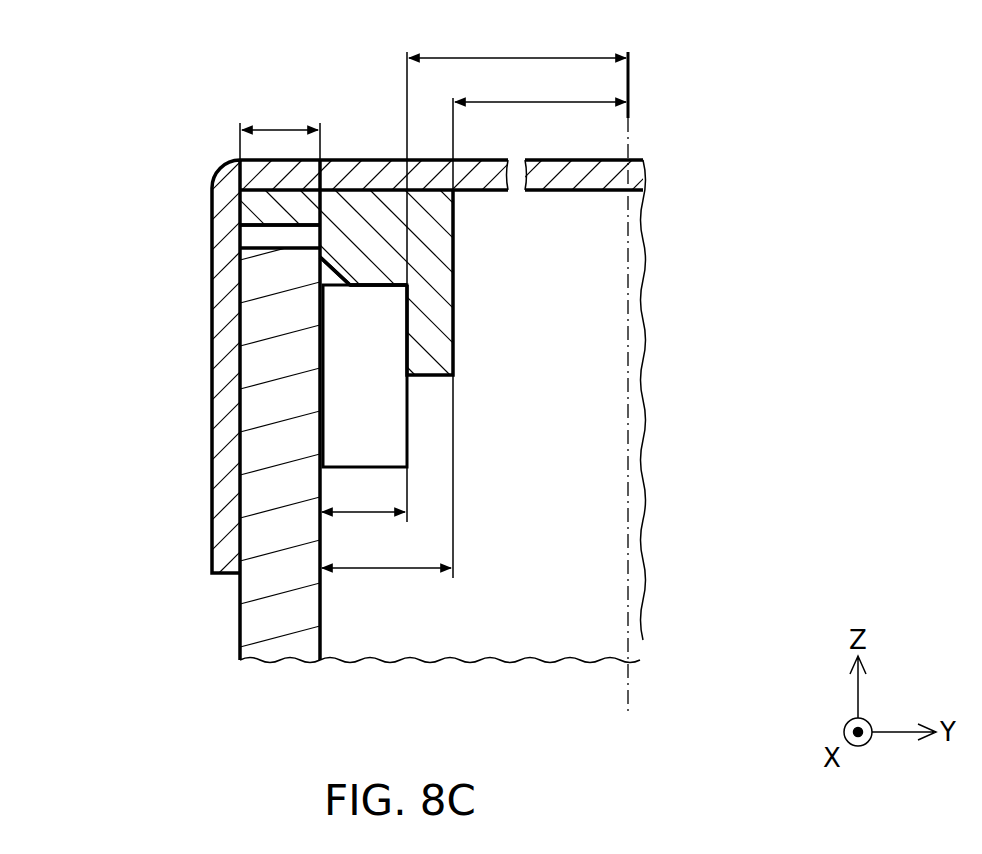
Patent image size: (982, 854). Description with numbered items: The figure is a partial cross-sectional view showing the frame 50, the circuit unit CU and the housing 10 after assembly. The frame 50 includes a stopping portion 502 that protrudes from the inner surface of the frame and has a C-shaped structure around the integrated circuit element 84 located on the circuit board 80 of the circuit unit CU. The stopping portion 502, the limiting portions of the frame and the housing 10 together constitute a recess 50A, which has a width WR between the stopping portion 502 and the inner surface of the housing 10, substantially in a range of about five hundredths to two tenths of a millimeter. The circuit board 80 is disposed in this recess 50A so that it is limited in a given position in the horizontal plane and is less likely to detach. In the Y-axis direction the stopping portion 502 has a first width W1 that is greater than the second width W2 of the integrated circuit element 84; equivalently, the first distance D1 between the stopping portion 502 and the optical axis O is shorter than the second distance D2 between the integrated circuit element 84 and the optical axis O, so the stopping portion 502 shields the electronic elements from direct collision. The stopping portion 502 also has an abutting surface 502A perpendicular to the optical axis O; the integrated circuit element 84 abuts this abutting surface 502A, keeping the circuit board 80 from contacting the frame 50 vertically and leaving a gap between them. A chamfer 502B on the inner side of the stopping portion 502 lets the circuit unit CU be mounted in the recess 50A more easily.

The housing 10 is at (228, 489).
The frame 50 is at (365, 224).
The recess 50A is at (264, 235).
The stopping portion 502 is at (430, 286).
The abutting surface 502A is at (363, 288).
The chamfer 502B is at (323, 274).
The integrated circuit element 84 is at (365, 408).
The circuit board 80 is at (262, 633).
The optical axis O is at (630, 137).
The circuit unit CU is at (326, 614).
The width of recess WR is at (280, 129).
The first distance D1 is at (539, 130).
The second distance D2 is at (516, 109).
The first width W1 is at (387, 476).
The second width W2 is at (364, 494).